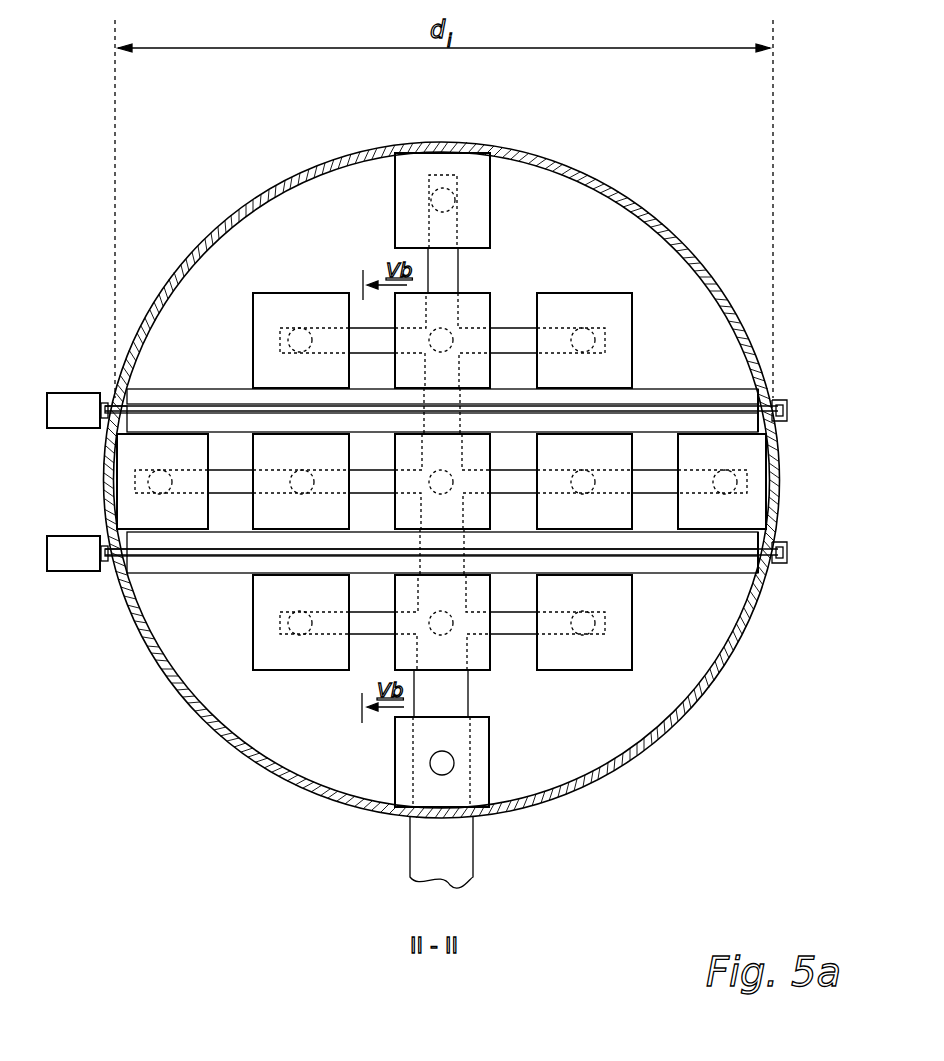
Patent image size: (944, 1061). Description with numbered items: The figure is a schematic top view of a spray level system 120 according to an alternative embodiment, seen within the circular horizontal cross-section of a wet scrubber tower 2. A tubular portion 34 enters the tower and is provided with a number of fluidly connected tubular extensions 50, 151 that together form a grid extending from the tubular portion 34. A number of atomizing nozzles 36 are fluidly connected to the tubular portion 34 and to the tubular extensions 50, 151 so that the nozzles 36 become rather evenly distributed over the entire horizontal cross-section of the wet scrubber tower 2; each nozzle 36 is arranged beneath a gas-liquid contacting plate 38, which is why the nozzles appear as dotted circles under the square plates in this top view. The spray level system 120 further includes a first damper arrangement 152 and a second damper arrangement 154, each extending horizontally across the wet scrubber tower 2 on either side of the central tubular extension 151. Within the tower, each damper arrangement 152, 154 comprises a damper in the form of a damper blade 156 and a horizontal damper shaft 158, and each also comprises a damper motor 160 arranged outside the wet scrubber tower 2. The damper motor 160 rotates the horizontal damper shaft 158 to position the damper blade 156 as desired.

The wet scrubber tower 2 is at (703, 265).
The tubular portion 34 is at (473, 843).
The atomizing nozzle 36 is at (450, 190).
The gas-liquid contacting plate 38 is at (327, 293).
The tubular extension 50 is at (507, 328).
The spray level system 120 is at (360, 742).
The central tubular extension 151 is at (213, 494).
The first damper arrangement 152 is at (160, 582).
The second damper arrangement 154 is at (165, 385).
The damper blade 156 is at (722, 395).
The horizontal damper shaft 158 is at (785, 400).
The damper motor 160 is at (75, 393).